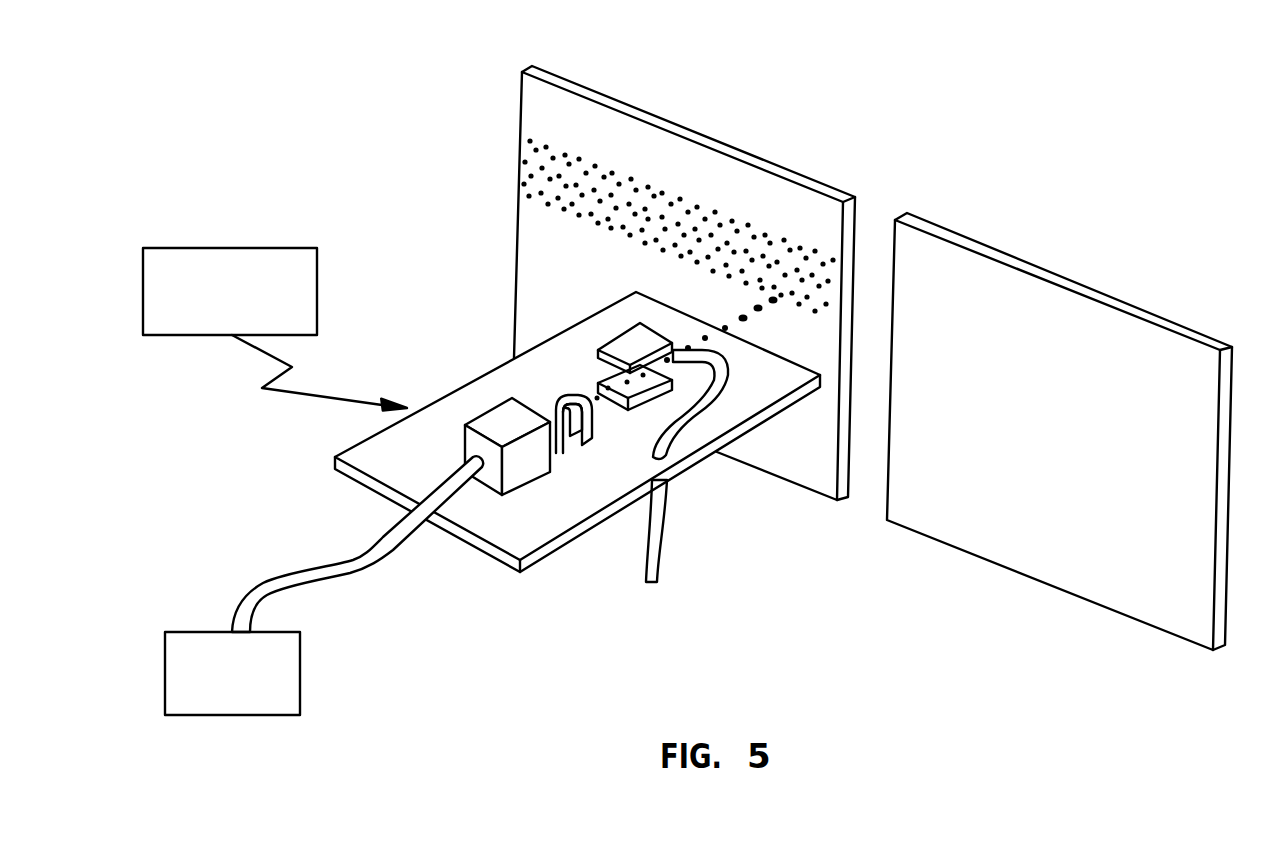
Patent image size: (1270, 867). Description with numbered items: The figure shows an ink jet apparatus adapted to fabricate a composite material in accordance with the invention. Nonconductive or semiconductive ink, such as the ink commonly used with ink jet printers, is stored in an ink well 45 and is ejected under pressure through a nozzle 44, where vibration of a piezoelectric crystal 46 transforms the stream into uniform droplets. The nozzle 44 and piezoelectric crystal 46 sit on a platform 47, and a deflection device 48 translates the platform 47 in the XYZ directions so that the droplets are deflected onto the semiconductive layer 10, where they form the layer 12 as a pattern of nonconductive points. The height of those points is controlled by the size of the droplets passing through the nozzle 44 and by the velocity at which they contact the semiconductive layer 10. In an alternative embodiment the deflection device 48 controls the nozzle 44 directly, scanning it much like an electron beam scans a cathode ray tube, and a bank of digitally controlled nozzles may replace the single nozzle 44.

The semiconductive layer 10 is at (1043, 272).
The layer 12 is at (638, 108).
The nozzle 44 is at (497, 420).
The ink well 45 is at (193, 630).
The piezoelectric crystal 46 is at (628, 343).
The platform 47 is at (340, 455).
The deflection device 48 is at (202, 248).